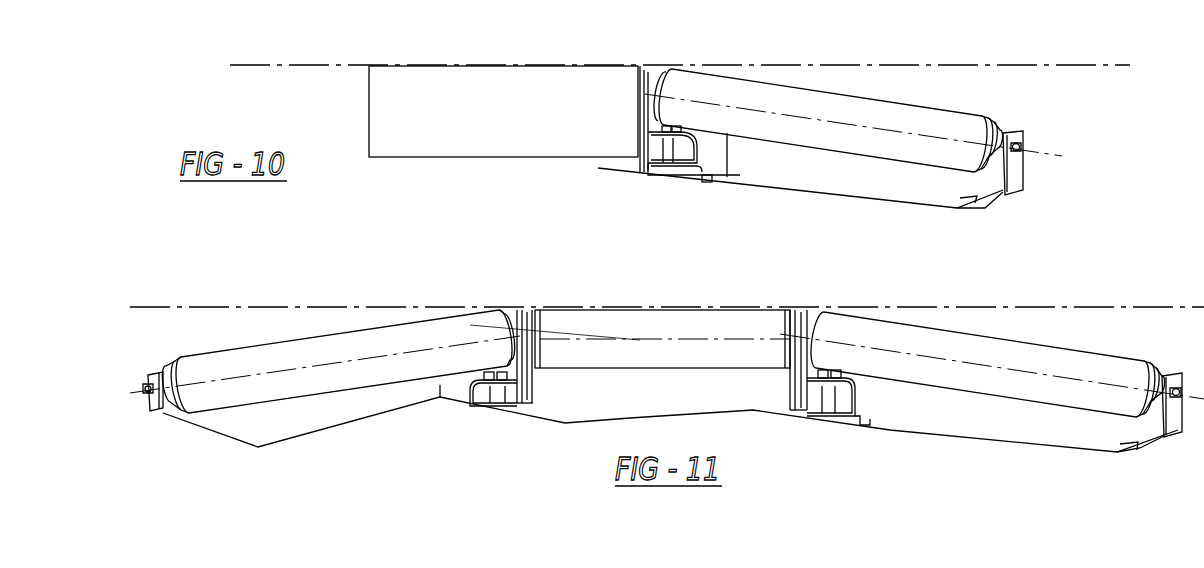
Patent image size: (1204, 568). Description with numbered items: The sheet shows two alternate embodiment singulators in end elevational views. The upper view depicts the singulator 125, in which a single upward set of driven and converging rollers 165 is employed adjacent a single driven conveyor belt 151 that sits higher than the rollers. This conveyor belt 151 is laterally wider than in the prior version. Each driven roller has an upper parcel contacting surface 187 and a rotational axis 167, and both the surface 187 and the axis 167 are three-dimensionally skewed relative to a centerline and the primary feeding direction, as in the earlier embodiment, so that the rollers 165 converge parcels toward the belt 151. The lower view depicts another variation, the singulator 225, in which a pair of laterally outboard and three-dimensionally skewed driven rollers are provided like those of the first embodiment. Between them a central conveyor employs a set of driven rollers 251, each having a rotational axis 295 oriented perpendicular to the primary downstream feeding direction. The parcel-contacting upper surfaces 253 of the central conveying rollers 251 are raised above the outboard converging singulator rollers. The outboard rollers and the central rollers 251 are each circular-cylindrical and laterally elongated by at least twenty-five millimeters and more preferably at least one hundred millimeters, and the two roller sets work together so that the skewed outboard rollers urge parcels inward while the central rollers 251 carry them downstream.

In FIG. 10, the singulator 125 is at (1042, 183).
In FIG. 10, the conveyor belt 151 is at (508, 132).
In FIG. 10, the driven and converging rollers 165 is at (860, 127).
In FIG. 10, the rotational axis 167 is at (893, 130).
In FIG. 10, the upper parcel contacting surface 187 is at (815, 90).
In FIG. 11, the singulator 225 is at (852, 438).
In FIG. 11, the driven rollers 251 is at (685, 318).
In FIG. 11, the parcel-contacting upper surfaces 253 is at (628, 306).
In FIG. 11, the rotational axis 295 is at (605, 342).